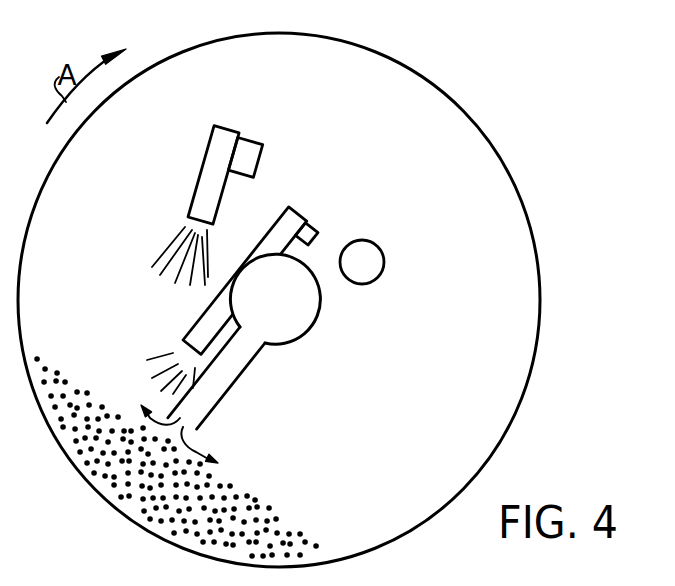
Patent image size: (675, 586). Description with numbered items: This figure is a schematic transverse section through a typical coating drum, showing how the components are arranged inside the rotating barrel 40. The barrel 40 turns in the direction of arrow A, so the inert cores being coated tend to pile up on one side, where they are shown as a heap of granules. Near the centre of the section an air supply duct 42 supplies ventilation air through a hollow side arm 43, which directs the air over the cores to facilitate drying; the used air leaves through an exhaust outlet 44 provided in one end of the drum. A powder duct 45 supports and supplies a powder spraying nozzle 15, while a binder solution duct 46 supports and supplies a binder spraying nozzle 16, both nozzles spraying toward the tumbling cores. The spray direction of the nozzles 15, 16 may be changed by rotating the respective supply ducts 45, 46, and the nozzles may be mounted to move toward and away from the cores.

The rotating barrel 40 is at (440, 88).
The binder spraying nozzle 16 is at (199, 179).
The binder solution duct 46 is at (259, 157).
The powder spraying nozzle 15 is at (281, 215).
The powder duct 45 is at (318, 232).
The exhaust outlet 44 is at (384, 264).
The air supply duct 42 is at (319, 323).
The hollow side arm 43 is at (236, 380).